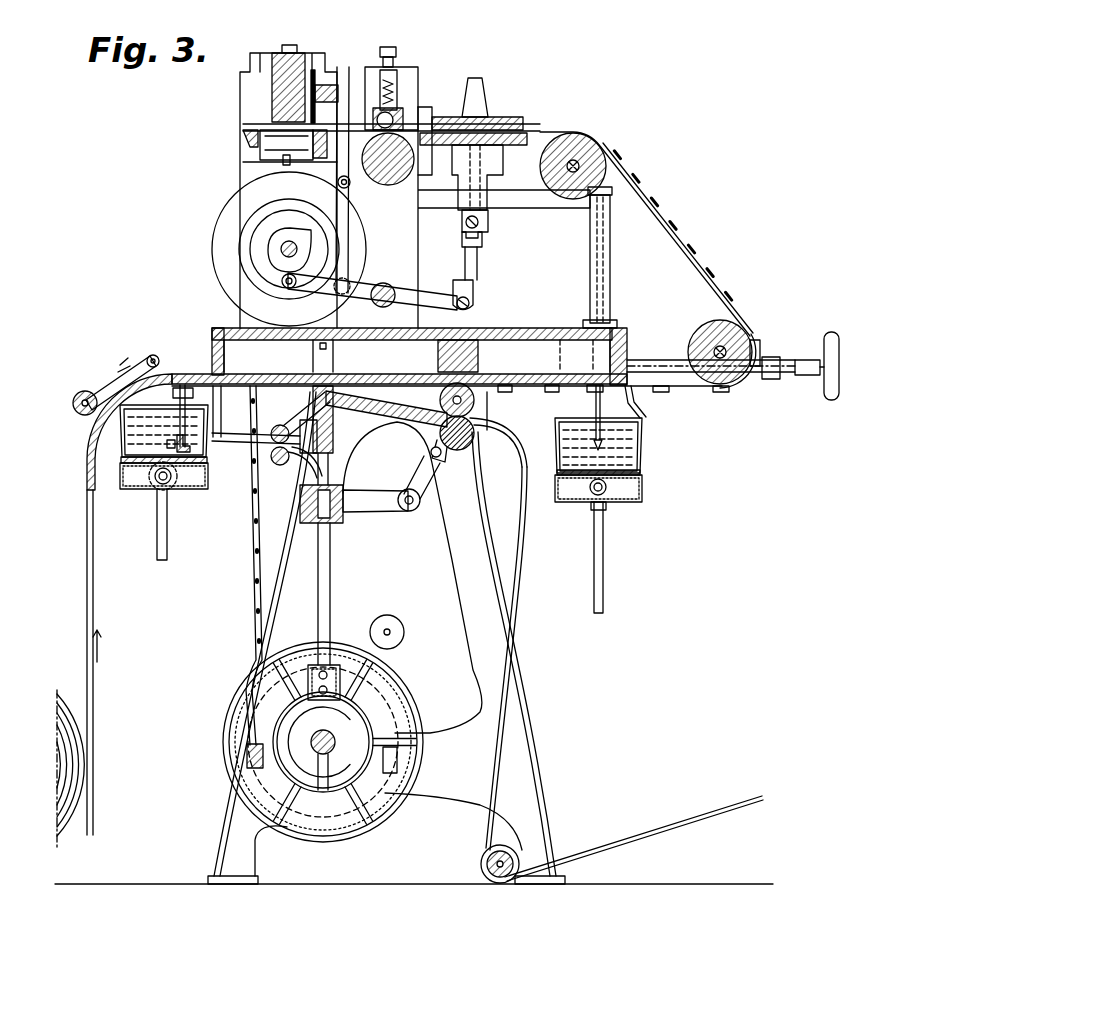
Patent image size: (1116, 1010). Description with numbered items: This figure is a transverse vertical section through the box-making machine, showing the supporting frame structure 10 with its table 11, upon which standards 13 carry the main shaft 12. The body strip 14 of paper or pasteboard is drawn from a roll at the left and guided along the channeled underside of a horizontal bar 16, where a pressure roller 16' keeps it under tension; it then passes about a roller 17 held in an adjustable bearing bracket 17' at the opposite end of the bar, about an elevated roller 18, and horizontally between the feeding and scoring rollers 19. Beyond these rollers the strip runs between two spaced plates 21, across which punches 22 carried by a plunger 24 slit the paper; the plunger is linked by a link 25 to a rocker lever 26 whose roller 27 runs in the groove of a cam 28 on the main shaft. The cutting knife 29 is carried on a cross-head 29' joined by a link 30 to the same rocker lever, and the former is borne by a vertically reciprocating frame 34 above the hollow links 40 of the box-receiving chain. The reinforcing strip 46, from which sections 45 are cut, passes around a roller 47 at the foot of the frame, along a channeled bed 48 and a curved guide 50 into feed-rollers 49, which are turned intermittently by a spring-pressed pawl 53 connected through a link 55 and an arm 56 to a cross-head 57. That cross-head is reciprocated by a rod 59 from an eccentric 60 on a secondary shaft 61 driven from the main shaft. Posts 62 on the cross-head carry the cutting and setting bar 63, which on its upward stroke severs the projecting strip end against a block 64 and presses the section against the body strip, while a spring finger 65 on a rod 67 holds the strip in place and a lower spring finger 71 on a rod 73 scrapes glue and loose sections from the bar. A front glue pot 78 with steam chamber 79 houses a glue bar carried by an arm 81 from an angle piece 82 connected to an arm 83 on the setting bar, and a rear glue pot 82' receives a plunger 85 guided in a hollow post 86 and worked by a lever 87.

The supporting frame structure 10 is at (548, 735).
The table 11 is at (212, 338).
The main shaft 12 is at (284, 243).
The standards 13 is at (86, 766).
The strip of paper or pasteboard 14 is at (668, 232).
The horizontally-disposed bar 16 is at (447, 357).
The pressure roller 16' is at (76, 390).
The roller 17 is at (733, 376).
The adjustable bearing bracket 17' is at (783, 332).
The elevated roller 18 is at (589, 147).
The feeding and scoring rollers 19 is at (420, 138).
The spaced plates 21 is at (505, 120).
The punches 22 is at (488, 108).
The plunger 24 is at (468, 187).
The link 25 is at (480, 259).
The rocker lever 26 is at (476, 316).
The roller 27 is at (283, 283).
The cam 28 is at (212, 249).
The cutting knife 29 is at (342, 66).
The cross-head 29' is at (384, 80).
The link 30 is at (351, 206).
The vertically-reciprocating frame 34 is at (283, 62).
The hollow links 40 is at (243, 133).
The reinforcing sections 45 is at (728, 294).
The reinforcing strip 46 is at (342, 372).
The roller 47 is at (516, 856).
The longitudinally channeled bed 48 is at (398, 416).
The feed-rollers 49 is at (476, 402).
The curved guide 50 is at (527, 470).
The spring-pressed pawl 53 is at (440, 456).
The link 55 is at (412, 509).
The arm 56 is at (385, 512).
The cross-head 57 is at (290, 530).
The rod 59 is at (331, 594).
The eccentric 60 is at (343, 724).
The secondary shaft 61 is at (313, 740).
The posts 62 is at (303, 490).
The bar 63 is at (338, 448).
The block 64 is at (376, 376).
The spring finger 65 is at (281, 424).
The rod 67 is at (258, 436).
The spring finger 71 is at (284, 470).
The rod 73 is at (276, 463).
The glue pot 78 is at (123, 405).
The steam chamber 79 is at (197, 483).
The arm 81 is at (127, 367).
The angle piece 82 is at (164, 381).
The glue pot 82' is at (632, 515).
The arm 83 is at (237, 447).
The plunger 85 is at (644, 410).
The hollow post 86 is at (612, 283).
The lever 87 is at (523, 197).